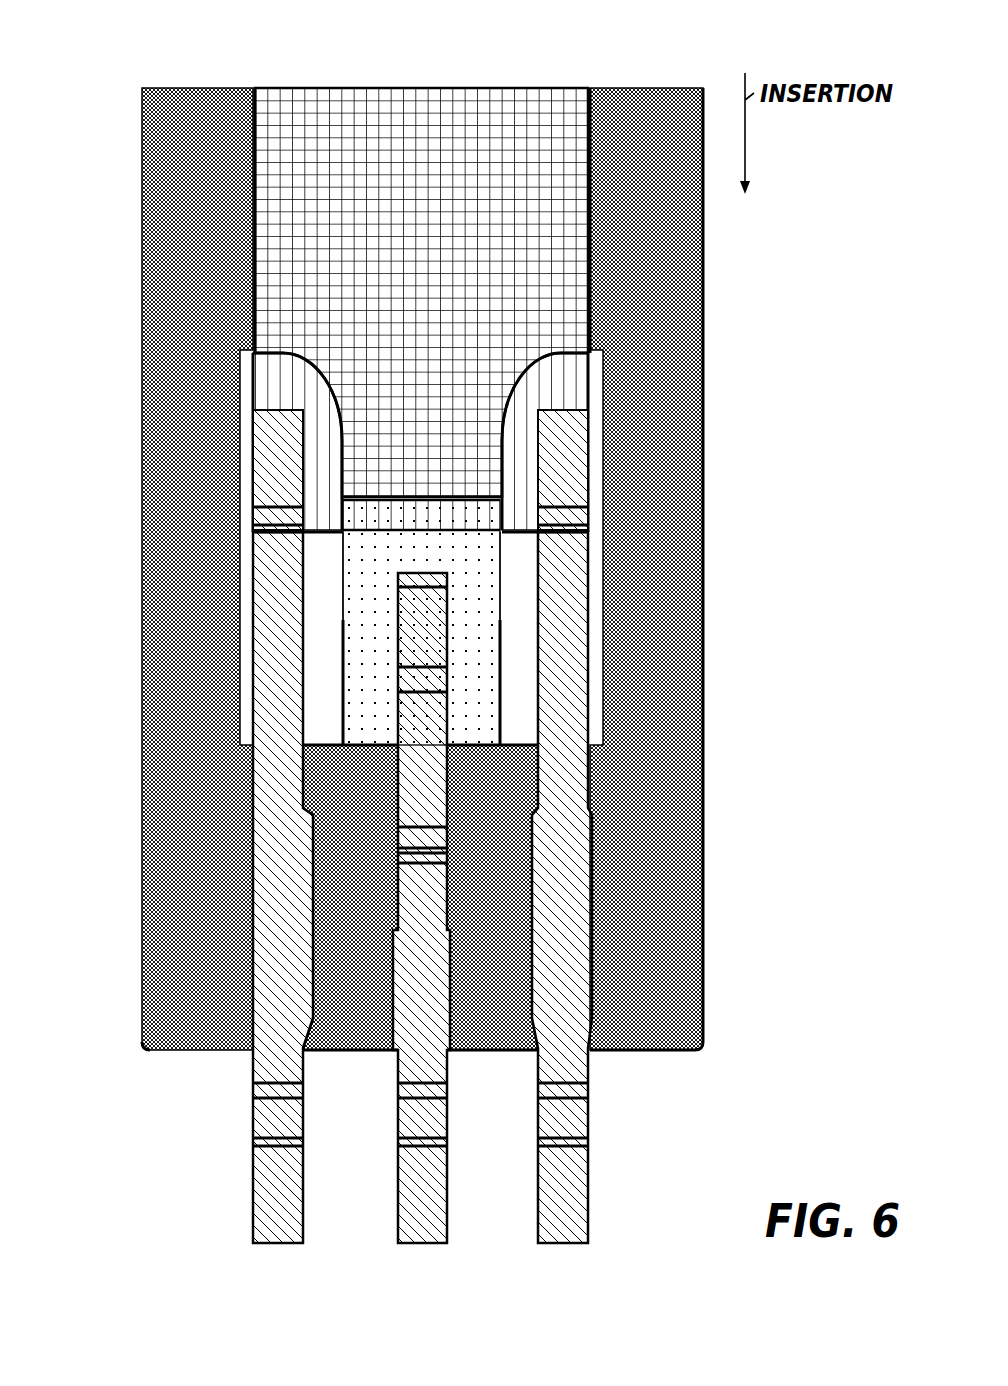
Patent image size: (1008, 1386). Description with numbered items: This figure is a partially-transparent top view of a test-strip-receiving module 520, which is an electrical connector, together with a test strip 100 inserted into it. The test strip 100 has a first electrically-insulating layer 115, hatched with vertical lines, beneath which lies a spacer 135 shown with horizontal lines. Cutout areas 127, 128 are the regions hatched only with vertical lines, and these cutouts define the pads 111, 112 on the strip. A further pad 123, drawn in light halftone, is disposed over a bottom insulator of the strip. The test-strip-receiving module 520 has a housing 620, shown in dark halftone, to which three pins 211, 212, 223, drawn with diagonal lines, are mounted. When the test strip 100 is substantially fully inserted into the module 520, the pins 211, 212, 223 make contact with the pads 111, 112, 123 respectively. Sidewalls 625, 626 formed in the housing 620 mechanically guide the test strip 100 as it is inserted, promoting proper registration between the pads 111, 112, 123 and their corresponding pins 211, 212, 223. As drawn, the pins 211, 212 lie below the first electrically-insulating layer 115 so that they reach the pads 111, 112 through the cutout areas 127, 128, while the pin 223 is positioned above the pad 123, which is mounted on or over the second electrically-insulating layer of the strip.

The test strip 100 is at (409, 372).
The spacer 135 is at (474, 87).
The sidewall 625 is at (590, 283).
The sidewall 626 is at (252, 283).
The first electrically-insulating layer 115 is at (250, 366).
The cutout area 128 is at (252, 386).
The cutout area 127 is at (590, 386).
The test-strip-receiving module 520 is at (394, 665).
The housing 620 is at (165, 545).
The pad 112 is at (322, 538).
The pad 111 is at (519, 538).
The pad 123 is at (340, 607).
The pin 212 is at (250, 763).
The pin 211 is at (590, 763).
The pin 223 is at (397, 1150).